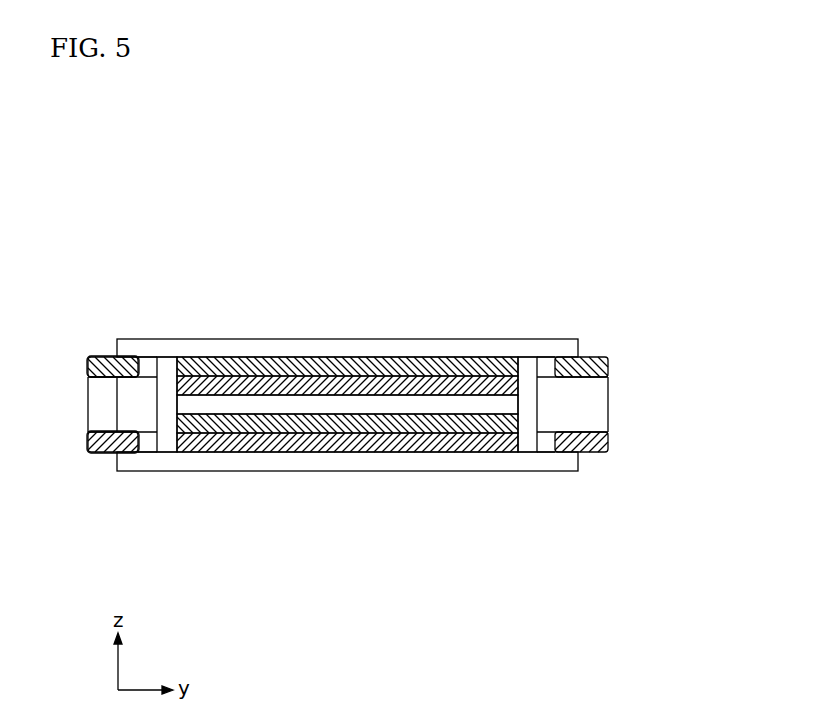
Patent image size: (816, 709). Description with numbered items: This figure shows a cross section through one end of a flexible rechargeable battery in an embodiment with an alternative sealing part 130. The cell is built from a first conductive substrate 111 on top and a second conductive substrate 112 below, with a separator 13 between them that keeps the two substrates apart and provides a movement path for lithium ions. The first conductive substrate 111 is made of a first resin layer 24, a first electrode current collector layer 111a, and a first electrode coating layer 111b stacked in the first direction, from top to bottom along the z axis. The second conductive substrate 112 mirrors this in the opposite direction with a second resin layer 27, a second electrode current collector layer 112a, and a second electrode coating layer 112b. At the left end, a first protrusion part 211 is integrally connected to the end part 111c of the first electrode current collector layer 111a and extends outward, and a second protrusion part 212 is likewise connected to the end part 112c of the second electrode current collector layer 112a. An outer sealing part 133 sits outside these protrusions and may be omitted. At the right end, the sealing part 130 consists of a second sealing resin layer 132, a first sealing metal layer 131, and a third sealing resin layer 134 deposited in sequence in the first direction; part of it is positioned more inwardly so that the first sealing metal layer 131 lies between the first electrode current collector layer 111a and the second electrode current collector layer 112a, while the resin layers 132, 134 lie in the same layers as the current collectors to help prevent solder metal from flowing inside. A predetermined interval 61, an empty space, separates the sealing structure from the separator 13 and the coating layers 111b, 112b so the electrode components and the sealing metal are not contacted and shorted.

The separator 13 is at (368, 407).
The first resin layer 24 is at (562, 340).
The second resin layer 27 is at (568, 460).
The predetermined interval 61 is at (167, 372).
The first conductive substrate 111 is at (352, 456).
The first electrode current collector layer 111a is at (249, 366).
The first electrode coating layer 111b is at (337, 386).
The end part of the first electrode current collector layer 111c is at (128, 357).
The second conductive substrate 112 is at (414, 541).
The second electrode current collector layer 112a is at (215, 440).
The second electrode coating layer 112b is at (270, 425).
The end part of the second electrode current collector layer 112c is at (128, 455).
The sealing part 130 is at (636, 402).
The first sealing metal layer 131 is at (587, 398).
The second sealing resin layer 132 is at (548, 366).
The outer sealing part 133 is at (97, 407).
The third sealing resin layer 134 is at (548, 440).
The first protrusion part 211 is at (105, 355).
The second protrusion part 212 is at (105, 457).